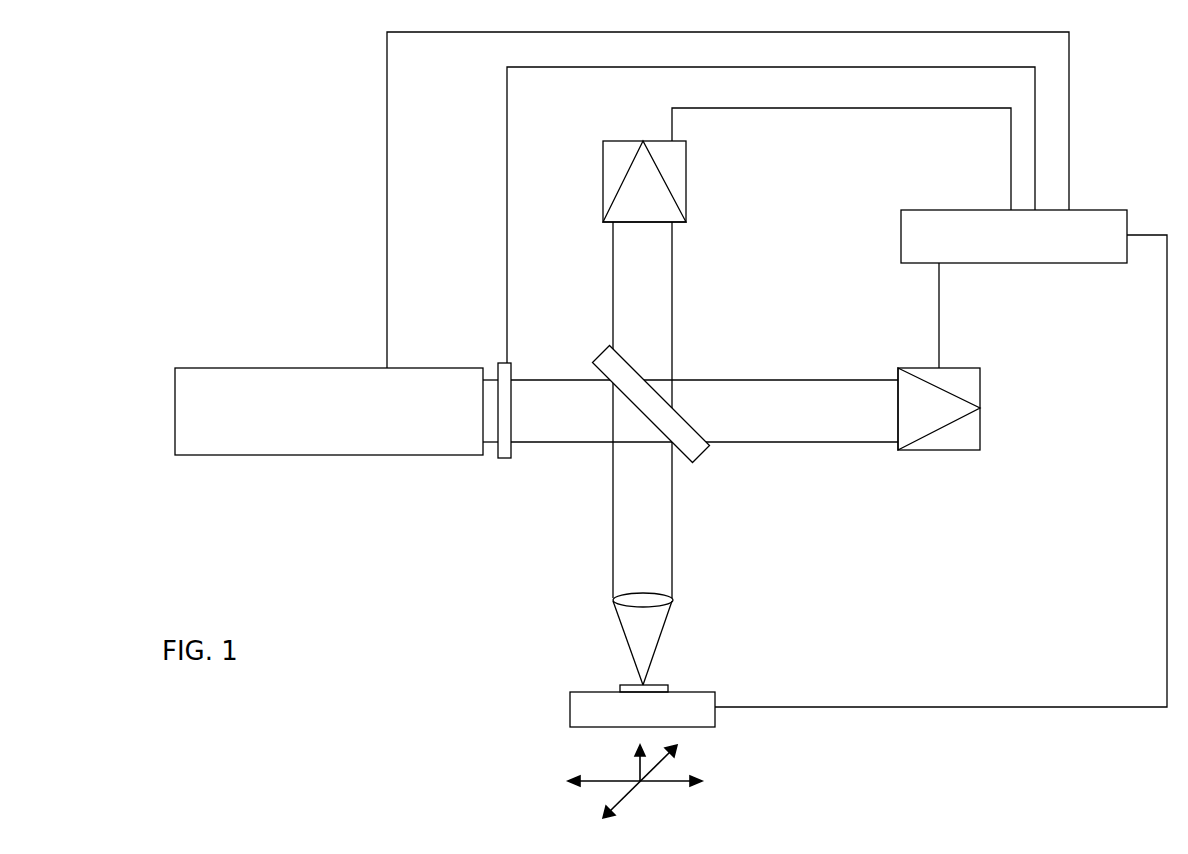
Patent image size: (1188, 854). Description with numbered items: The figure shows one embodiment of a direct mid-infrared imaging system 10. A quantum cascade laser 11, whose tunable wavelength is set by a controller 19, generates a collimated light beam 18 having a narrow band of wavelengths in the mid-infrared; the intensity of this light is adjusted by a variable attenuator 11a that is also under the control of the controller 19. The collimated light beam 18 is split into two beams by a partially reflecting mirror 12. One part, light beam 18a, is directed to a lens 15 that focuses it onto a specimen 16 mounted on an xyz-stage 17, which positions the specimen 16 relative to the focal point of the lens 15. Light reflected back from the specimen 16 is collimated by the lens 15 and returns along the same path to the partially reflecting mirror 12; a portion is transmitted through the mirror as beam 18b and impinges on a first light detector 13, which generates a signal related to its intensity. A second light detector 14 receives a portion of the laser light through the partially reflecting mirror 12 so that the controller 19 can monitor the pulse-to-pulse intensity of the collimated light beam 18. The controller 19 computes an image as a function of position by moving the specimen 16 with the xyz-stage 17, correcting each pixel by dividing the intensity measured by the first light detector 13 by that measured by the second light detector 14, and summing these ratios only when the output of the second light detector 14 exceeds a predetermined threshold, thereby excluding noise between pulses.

The imaging system 10 is at (322, 243).
The quantum cascade laser 11 is at (220, 455).
The variable attenuator 11a is at (502, 458).
The partially reflecting mirror 12 is at (694, 458).
The first light detector 13 is at (686, 182).
The second light detector 14 is at (980, 432).
The lens 15 is at (672, 605).
The specimen 16 is at (630, 685).
The xyz-stage 17 is at (570, 705).
The collimated light beam 18 is at (557, 380).
The light beam 18a is at (623, 563).
The beam 18b is at (663, 291).
The controller 19 is at (1060, 263).